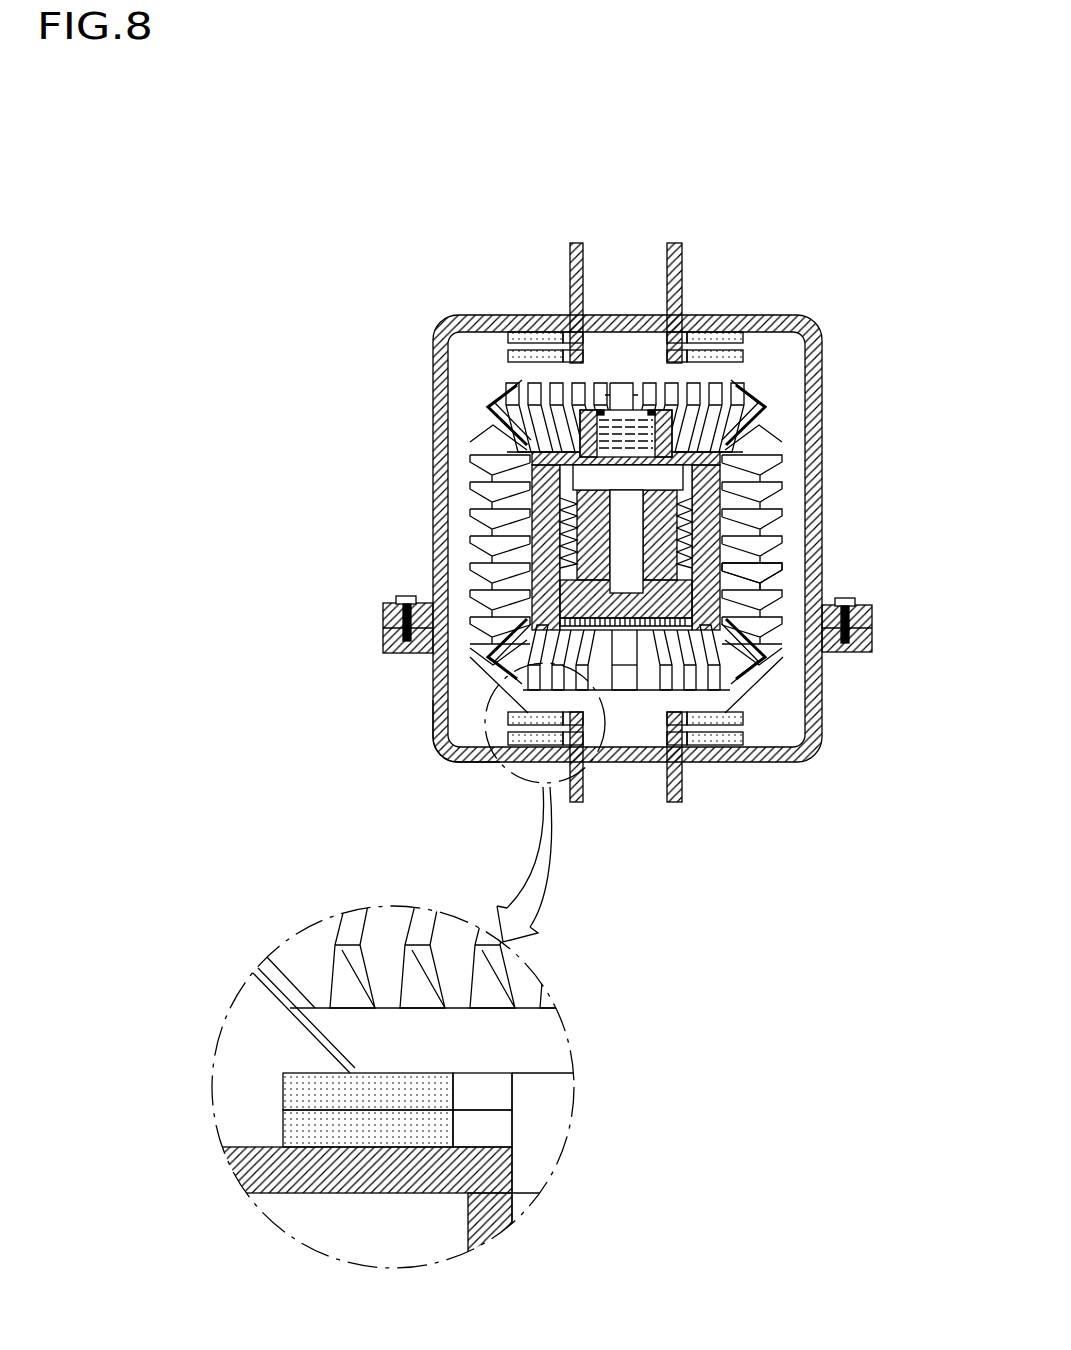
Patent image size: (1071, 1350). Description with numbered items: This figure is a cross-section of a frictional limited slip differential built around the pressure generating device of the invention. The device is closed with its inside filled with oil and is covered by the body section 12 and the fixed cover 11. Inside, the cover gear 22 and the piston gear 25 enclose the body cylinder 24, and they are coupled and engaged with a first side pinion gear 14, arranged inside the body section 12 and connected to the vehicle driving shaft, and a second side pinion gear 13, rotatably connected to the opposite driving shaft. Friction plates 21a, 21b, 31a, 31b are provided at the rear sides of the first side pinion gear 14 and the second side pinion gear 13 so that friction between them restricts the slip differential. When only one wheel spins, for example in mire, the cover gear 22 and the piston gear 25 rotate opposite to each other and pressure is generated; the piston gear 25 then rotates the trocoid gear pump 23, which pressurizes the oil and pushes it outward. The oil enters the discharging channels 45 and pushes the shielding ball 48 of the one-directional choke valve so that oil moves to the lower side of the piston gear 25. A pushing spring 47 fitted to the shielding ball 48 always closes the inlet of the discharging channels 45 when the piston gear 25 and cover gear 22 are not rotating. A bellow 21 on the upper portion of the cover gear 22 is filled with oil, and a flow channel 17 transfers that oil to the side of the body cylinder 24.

The fixed cover 11 is at (485, 318).
The body section 12 is at (463, 763).
The second side pinion gear 13 is at (765, 392).
The first side pinion gear 14 is at (743, 682).
The flow channel 17 is at (692, 415).
The bellow 21 is at (637, 402).
The friction plate 21a is at (743, 718).
The friction plate 21b is at (740, 738).
The cover gear 22 is at (505, 403).
The trocoid gear pump 23 is at (760, 503).
The body cylinder 24 is at (728, 565).
The piston gear 25 is at (485, 657).
The friction plate 31a is at (730, 335).
The friction plate 31b is at (725, 362).
The discharging channel 45 is at (568, 568).
The pushing spring 47 is at (740, 540).
The shielding ball 48 is at (567, 515).